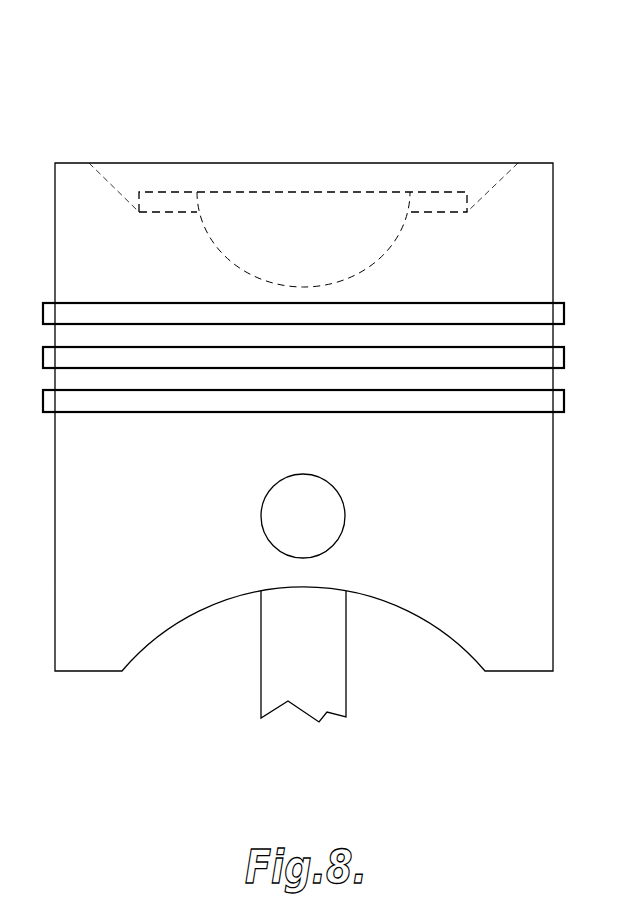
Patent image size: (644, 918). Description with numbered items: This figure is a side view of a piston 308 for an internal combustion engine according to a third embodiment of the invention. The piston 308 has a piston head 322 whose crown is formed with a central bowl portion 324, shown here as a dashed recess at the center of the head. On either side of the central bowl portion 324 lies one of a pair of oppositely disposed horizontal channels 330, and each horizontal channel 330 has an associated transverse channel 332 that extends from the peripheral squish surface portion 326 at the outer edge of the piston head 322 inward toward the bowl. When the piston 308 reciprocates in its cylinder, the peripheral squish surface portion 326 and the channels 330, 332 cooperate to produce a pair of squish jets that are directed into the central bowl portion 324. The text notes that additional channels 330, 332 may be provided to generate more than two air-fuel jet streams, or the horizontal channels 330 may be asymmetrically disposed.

The piston 308 is at (340, 393).
The piston head 322 is at (545, 243).
The central bowl portion 324 is at (363, 270).
The peripheral squish surface portion 326 is at (75, 162).
The horizontal channel 330 is at (165, 197).
The transverse channel 332 is at (117, 177).